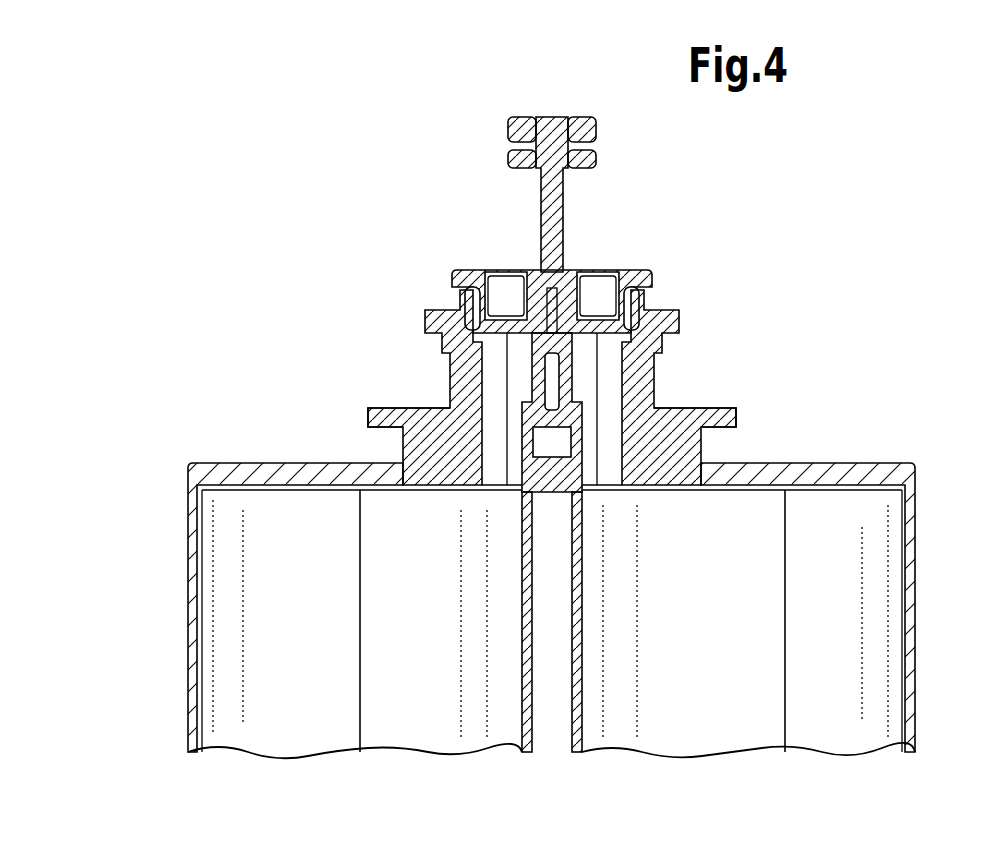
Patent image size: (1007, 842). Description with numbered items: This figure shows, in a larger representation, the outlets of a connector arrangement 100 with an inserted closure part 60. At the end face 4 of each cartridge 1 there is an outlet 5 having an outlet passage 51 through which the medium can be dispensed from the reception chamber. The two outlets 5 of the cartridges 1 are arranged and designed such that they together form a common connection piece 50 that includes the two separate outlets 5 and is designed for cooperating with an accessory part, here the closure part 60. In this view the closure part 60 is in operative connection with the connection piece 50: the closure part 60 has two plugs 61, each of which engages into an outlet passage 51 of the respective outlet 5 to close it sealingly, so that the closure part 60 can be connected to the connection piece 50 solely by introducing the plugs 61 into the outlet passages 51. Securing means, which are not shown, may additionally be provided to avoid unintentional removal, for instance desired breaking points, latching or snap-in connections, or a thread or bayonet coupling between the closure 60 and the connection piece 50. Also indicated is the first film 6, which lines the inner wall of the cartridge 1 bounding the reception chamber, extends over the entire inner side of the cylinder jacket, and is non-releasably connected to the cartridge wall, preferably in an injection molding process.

The connector arrangement 100 is at (366, 135).
The closure part 60 is at (565, 214).
The plug 61 is at (477, 297).
The outlet 5 is at (450, 385).
The connection piece 50 is at (392, 450).
The outlet passage 51 is at (493, 360).
The end face 4 is at (232, 463).
The cartridge 1 is at (302, 730).
The first film 6 is at (202, 681).